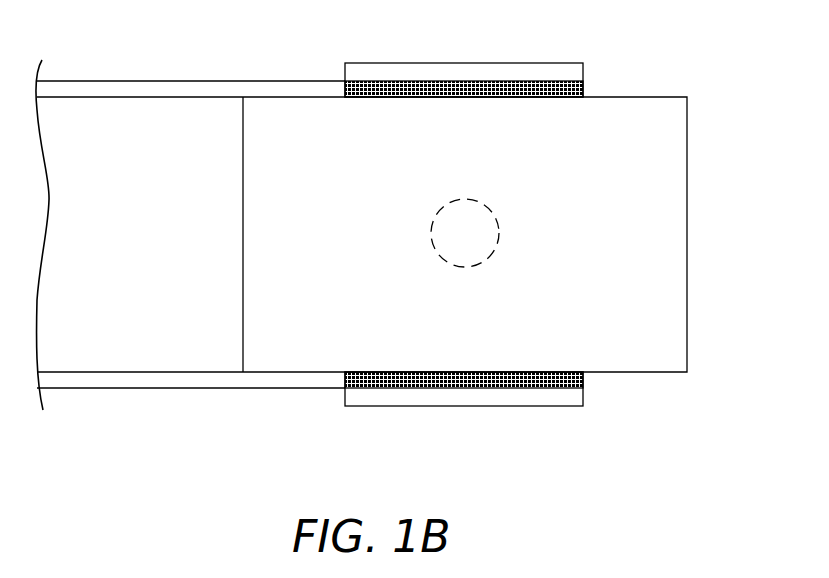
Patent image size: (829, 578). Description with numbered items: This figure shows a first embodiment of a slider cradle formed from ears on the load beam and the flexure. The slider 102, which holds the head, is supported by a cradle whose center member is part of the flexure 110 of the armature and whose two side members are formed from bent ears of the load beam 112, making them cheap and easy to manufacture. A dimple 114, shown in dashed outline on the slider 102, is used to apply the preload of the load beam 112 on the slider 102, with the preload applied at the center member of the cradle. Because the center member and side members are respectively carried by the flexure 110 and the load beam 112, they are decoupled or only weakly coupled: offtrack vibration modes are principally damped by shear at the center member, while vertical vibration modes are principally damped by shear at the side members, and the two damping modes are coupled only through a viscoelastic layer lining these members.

The slider 102 is at (687, 199).
The flexure 110 is at (173, 97).
The load beam 112 is at (210, 388).
The dimple 114 is at (499, 232).